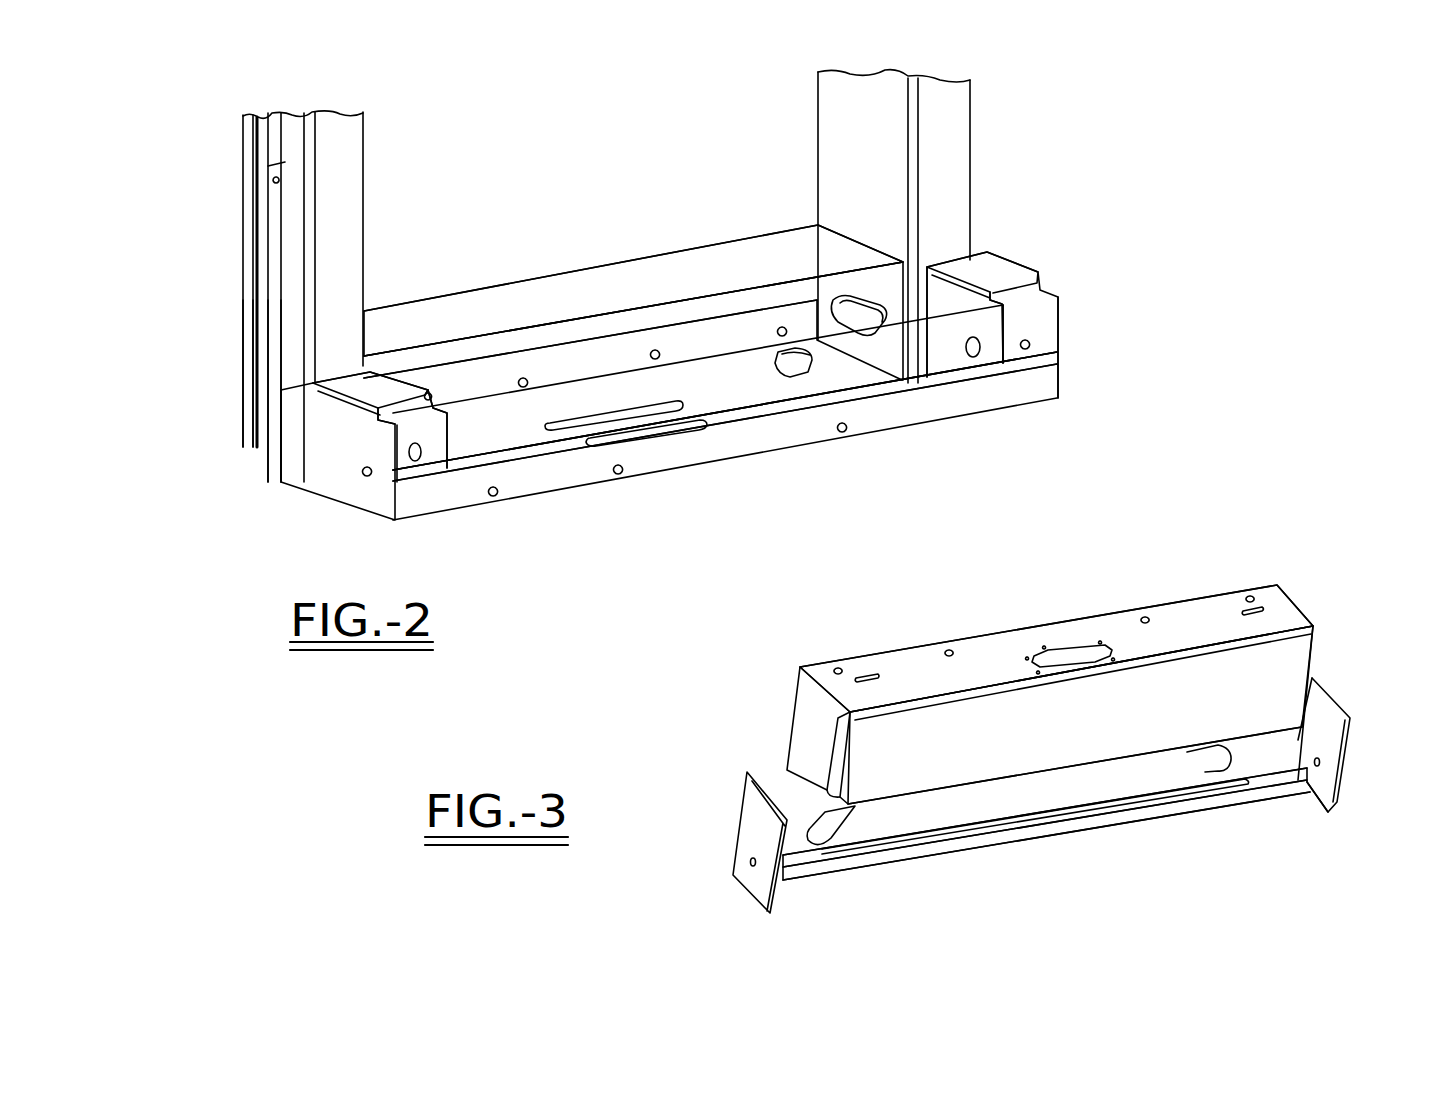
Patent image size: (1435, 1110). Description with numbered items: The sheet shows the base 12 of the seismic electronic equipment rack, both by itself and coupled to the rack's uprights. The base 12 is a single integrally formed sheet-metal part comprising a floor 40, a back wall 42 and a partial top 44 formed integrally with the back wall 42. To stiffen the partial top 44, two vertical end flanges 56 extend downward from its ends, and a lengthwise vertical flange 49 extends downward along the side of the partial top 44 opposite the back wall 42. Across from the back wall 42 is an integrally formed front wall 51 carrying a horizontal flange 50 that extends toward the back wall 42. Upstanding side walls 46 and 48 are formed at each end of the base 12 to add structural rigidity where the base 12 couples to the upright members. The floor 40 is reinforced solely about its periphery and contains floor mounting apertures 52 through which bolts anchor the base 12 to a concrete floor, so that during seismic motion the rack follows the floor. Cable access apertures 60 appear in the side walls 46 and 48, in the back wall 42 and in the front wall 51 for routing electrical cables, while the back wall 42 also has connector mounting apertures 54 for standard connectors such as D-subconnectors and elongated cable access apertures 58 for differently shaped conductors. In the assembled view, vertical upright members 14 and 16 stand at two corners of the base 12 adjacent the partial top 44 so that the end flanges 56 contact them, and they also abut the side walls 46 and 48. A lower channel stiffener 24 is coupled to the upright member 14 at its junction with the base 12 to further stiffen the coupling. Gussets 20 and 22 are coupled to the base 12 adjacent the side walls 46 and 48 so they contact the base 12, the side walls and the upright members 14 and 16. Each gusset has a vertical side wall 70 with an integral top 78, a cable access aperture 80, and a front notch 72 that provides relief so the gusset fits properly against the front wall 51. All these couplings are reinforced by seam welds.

In FIG. 2, the base 12 is at (787, 449).
In FIG. 3, the base 12 is at (1021, 846).
In FIG. 2, the vertical upright member 14 is at (350, 150).
In FIG. 2, the vertical upright member 16 is at (950, 138).
In FIG. 2, the gusset 20 is at (312, 384).
In FIG. 2, the gusset 22 is at (985, 265).
In FIG. 2, the lower channel stiffener 24 is at (276, 373).
In FIG. 2, the floor 40 is at (517, 433).
In FIG. 3, the floor 40 is at (795, 742).
In FIG. 3, the back wall 42 is at (1278, 612).
In FIG. 2, the partial top 44 is at (725, 258).
In FIG. 3, the partial top 44 is at (1272, 665).
In FIG. 2, the upstanding side wall 46 is at (332, 465).
In FIG. 3, the upstanding side wall 46 is at (748, 840).
In FIG. 2, the upstanding side wall 48 is at (1058, 327).
In FIG. 3, the upstanding side wall 48 is at (1333, 760).
In FIG. 2, the lengthwise vertical flange 49 is at (683, 313).
In FIG. 3, the horizontal flange 50 is at (1263, 790).
In FIG. 2, the front wall 51 is at (717, 447).
In FIG. 2, the floor mounting aperture 52 is at (607, 418).
In FIG. 3, the floor mounting aperture 52 is at (830, 825).
In FIG. 3, the connector mounting aperture 54 is at (1063, 653).
In FIG. 3, the vertical end flange 56 is at (838, 748).
In FIG. 3, the elongated cable access aperture 58 is at (860, 676).
In FIG. 2, the cable access aperture 60 is at (521, 383).
In FIG. 3, the cable access aperture 60 is at (836, 665).
In FIG. 2, the vertical side wall 70 is at (375, 418).
In FIG. 2, the front notch 72 is at (435, 465).
In FIG. 2, the top 78 is at (393, 362).
In FIG. 2, the cable access aperture 80 is at (420, 453).